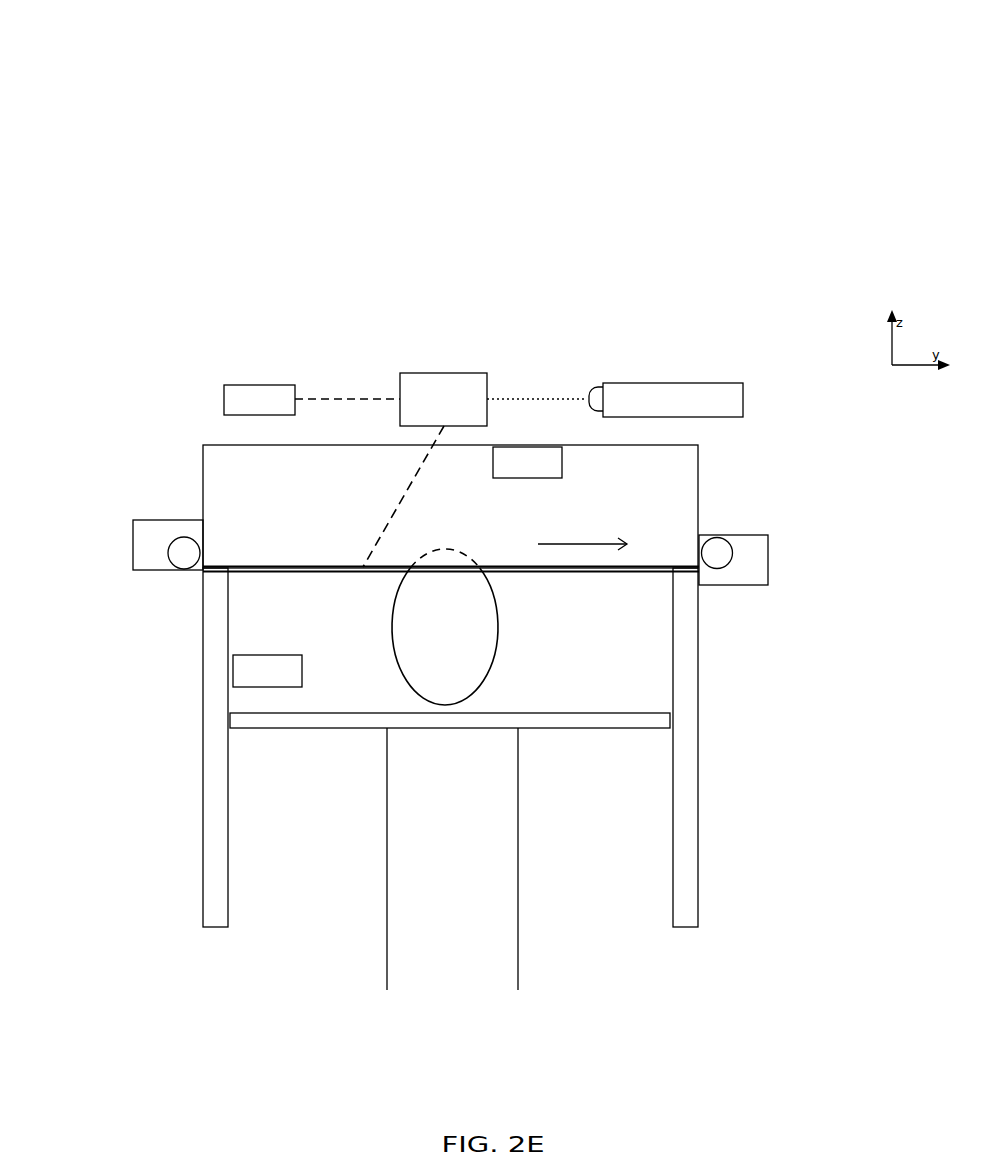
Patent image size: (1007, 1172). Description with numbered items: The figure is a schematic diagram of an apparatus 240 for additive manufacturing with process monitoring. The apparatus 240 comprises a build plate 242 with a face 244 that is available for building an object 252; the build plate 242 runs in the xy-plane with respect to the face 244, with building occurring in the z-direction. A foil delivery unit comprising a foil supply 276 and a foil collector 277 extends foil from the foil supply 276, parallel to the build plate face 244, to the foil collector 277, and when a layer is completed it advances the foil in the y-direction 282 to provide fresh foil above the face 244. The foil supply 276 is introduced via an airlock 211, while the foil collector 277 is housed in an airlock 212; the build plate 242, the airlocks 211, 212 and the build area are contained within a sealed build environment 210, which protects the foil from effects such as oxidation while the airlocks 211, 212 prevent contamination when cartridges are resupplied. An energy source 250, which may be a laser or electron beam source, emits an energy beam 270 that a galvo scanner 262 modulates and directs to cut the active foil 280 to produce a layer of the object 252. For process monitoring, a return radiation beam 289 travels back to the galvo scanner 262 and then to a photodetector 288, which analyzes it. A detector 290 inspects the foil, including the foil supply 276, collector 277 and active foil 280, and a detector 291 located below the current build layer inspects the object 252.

The apparatus 240 is at (182, 52).
The sealed build environment 210 is at (202, 566).
The airlock 211 is at (132, 568).
The airlock 212 is at (768, 558).
The foil supply 276 is at (185, 538).
The foil collector 277 is at (728, 538).
The active foil 280 is at (322, 567).
The photodetector 288 is at (282, 385).
The return radiation beam 289 is at (388, 398).
The galvo scanner 262 is at (445, 373).
The energy source 250 is at (628, 383).
The detector 290 is at (562, 462).
The energy beam 270 is at (403, 497).
The y-direction 282 is at (594, 534).
The object 252 is at (392, 630).
The detector 291 is at (297, 655).
The face 244 is at (627, 713).
The build plate 242 is at (647, 722).